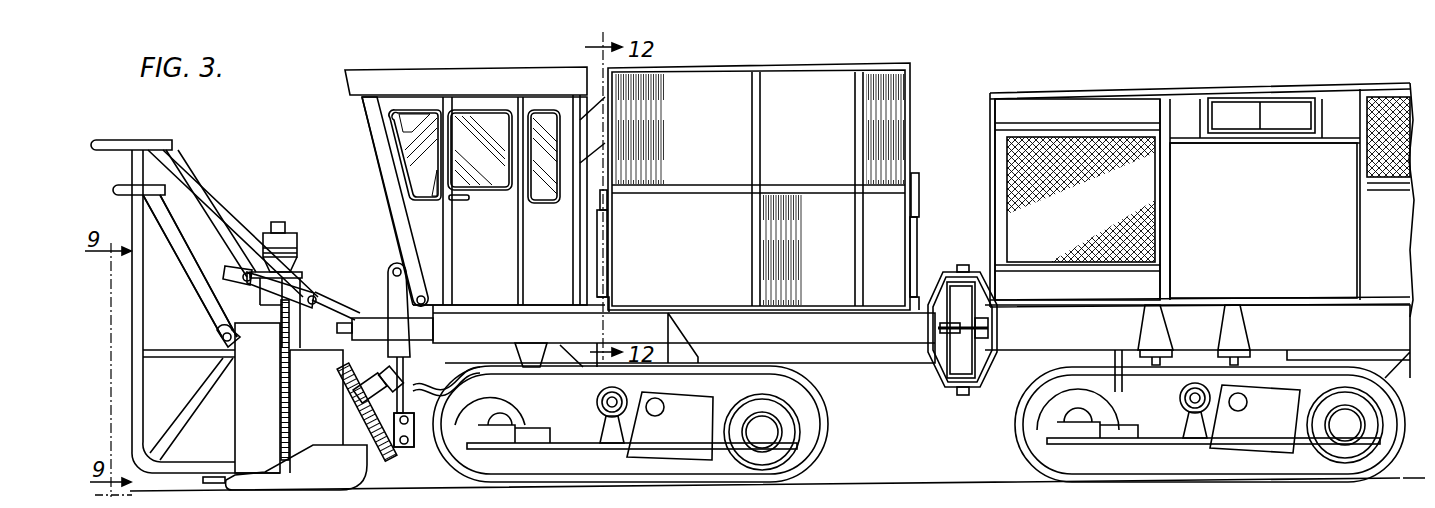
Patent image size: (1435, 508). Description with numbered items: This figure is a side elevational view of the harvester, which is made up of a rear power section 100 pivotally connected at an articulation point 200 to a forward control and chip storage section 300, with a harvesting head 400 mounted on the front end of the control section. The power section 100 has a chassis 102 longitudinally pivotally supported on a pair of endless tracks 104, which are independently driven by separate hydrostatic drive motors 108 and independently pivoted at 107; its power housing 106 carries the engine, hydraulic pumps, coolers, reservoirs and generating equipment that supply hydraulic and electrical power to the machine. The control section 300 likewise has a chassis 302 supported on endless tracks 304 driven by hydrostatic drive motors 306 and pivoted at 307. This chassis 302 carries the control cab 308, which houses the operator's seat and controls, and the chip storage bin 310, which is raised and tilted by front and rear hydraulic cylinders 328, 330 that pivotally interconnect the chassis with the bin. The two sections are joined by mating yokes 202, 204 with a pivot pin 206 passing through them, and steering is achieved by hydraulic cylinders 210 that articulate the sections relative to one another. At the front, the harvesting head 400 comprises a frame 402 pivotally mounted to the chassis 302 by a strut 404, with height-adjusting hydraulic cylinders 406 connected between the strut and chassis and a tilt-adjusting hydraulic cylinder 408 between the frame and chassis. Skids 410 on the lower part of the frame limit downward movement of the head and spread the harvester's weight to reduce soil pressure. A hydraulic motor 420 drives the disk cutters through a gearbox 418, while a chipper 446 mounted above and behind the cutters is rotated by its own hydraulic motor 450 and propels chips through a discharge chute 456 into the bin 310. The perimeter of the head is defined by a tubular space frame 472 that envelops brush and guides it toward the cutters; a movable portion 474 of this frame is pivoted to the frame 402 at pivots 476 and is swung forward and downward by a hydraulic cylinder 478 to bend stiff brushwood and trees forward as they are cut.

The rear power section 100 is at (1310, 86).
The chassis 102 is at (1122, 339).
The endless tracks 104 is at (1028, 460).
The power housing 106 is at (1110, 94).
The track pivot 107 is at (1238, 411).
The hydrostatic drive motors 108 is at (1347, 440).
The pivotal connection 200 is at (961, 357).
The yoke 202 is at (981, 378).
The yoke 204 is at (945, 385).
The pivot pin 206 is at (961, 396).
The hydraulic cylinders 210 is at (990, 330).
The control and chip storage section 300 is at (348, 138).
The chassis 302 is at (830, 388).
The endless tracks 304 is at (812, 466).
The hydrostatic drive motors 306 is at (763, 443).
The track pivot 307 is at (655, 416).
The control cab 308 is at (350, 92).
The chip storage bin 310 is at (905, 76).
The front hydraulic cylinder 328 is at (600, 259).
The rear hydraulic cylinder 330 is at (913, 235).
The harvesting head 400 is at (275, 172).
The frame 402 is at (278, 410).
The strut 404 is at (432, 428).
The height-adjusting hydraulic cylinders 406 is at (400, 325).
The tilt-adjusting hydraulic cylinder 408 is at (433, 328).
The skids 410 is at (350, 478).
The gearbox 418 is at (212, 483).
The hydraulic motor 420 is at (290, 240).
The chipper 446 is at (350, 433).
The hydraulic motor 450 is at (380, 370).
The discharge chute 456 is at (400, 266).
The tubular space frame 472 is at (112, 129).
The movable frame portion 474 is at (202, 291).
The pivots 476 is at (222, 337).
The hydraulic cylinder 478 is at (293, 293).